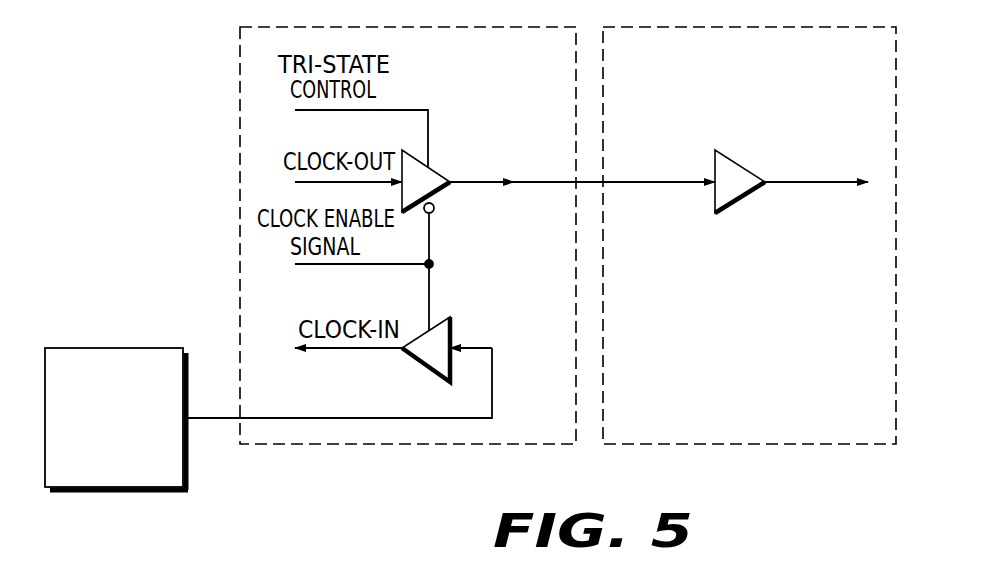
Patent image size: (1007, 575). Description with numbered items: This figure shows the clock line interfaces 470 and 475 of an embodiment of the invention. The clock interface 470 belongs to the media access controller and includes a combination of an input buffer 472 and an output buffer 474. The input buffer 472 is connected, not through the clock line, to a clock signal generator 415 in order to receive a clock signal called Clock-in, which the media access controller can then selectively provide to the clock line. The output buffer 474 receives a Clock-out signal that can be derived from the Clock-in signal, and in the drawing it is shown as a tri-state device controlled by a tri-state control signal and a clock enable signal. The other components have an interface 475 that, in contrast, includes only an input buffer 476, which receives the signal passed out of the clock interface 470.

The clock signal generator 415 is at (97, 348).
The clock interface 470 is at (552, 432).
The input buffer 472 is at (420, 366).
The output buffer 474 is at (442, 196).
The interface 475 is at (663, 432).
The input buffer 476 is at (714, 160).